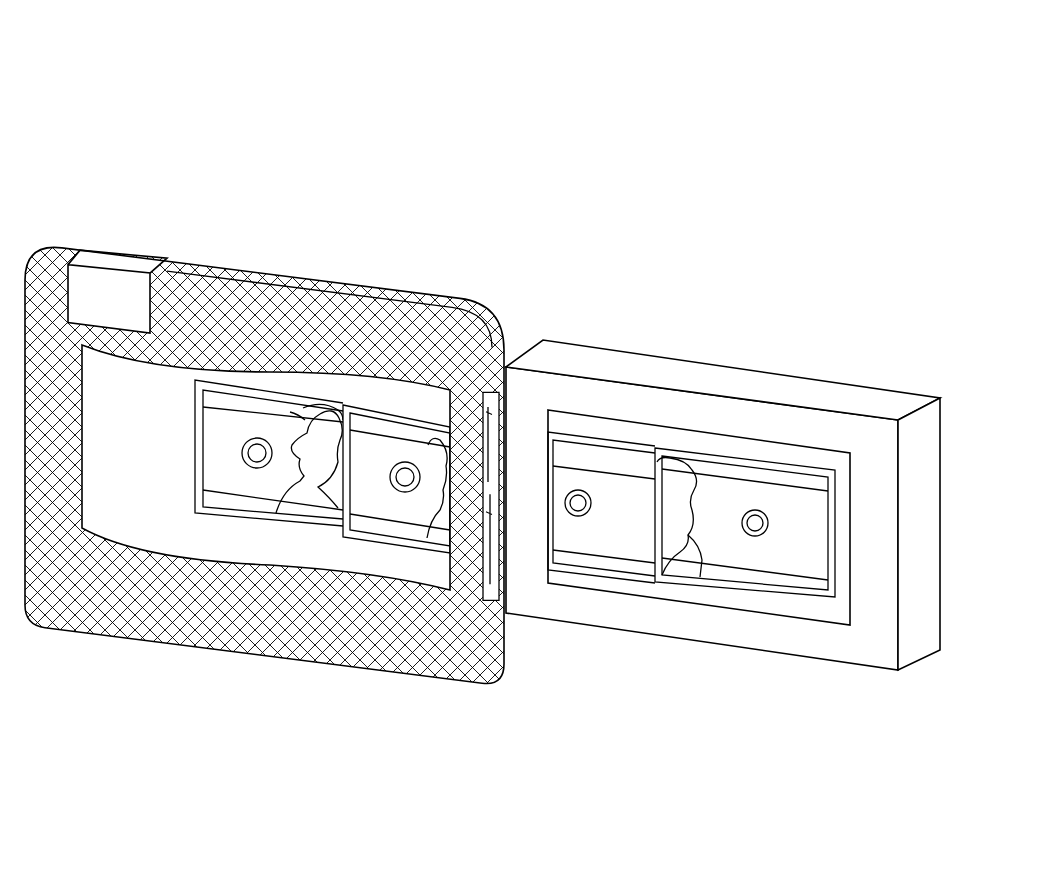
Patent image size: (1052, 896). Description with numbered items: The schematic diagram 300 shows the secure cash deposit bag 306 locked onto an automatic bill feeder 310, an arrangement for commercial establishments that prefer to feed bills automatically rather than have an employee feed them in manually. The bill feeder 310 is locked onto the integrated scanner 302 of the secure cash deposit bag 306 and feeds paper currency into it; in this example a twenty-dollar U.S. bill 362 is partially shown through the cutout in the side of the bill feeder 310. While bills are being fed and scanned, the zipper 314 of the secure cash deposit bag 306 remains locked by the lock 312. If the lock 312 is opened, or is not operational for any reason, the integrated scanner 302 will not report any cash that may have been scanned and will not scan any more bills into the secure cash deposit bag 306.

The schematic diagram 300 is at (90, 72).
The integrated scanner 302 is at (496, 363).
The secure cash deposit bag 306 is at (38, 262).
The bill feeder 310 is at (643, 368).
The lock 312 is at (117, 262).
The zipper 314 is at (335, 288).
The U.S. 20 bill 362 is at (388, 508).